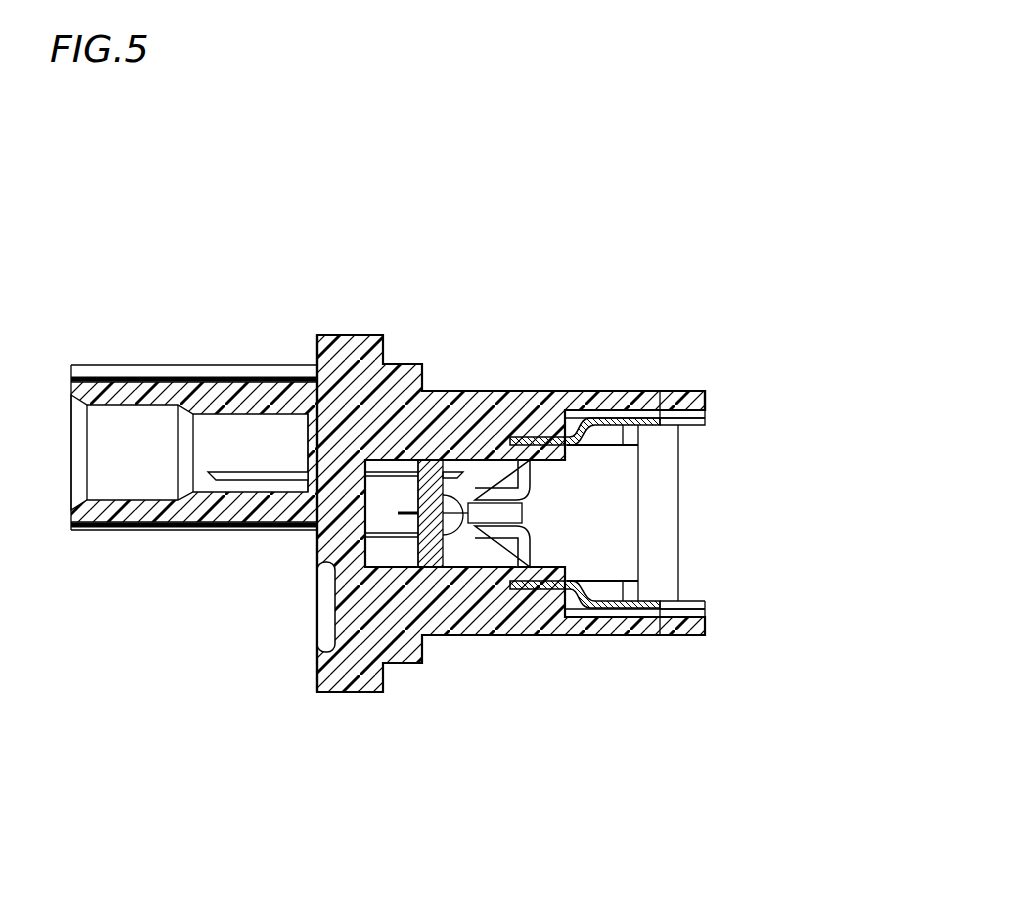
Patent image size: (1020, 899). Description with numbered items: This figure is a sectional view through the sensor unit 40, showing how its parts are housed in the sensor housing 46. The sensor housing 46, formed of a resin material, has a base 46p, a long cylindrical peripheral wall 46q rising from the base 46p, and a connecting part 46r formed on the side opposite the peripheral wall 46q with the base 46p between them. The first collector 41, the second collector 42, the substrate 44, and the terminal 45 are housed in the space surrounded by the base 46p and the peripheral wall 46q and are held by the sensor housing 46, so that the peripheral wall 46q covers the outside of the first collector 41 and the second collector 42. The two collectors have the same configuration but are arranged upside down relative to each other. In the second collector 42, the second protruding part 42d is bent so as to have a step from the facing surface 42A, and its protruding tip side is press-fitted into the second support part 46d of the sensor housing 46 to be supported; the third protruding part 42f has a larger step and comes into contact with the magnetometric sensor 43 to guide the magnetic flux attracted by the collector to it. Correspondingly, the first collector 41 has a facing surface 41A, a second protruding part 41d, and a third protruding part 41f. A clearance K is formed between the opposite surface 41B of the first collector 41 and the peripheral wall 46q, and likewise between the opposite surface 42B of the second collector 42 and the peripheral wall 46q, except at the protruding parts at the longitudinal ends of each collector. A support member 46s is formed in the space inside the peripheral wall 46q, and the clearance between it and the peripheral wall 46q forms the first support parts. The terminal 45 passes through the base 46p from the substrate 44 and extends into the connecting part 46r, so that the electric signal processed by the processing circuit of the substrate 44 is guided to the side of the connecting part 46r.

The sensor unit 40 is at (700, 250).
The first collector 41 is at (590, 421).
The facing surface 41A is at (650, 426).
The opposite surface 41B is at (675, 417).
The second protruding part 41d is at (520, 440).
The third protruding part 41f is at (490, 487).
The second collector 42 is at (612, 612).
The facing surface 42A is at (648, 601).
The opposite surface 42B is at (670, 617).
The second protruding part 42d is at (553, 590).
The third protruding part 42f is at (476, 528).
The magnetometric sensor 43 is at (492, 517).
The substrate 44 is at (418, 537).
The terminal 45 is at (247, 480).
The sensor housing 46 is at (401, 368).
The second support part 46d is at (512, 458).
The base 46p is at (350, 685).
The peripheral wall 46q is at (620, 398).
The connecting part 46r is at (134, 392).
The support member 46s is at (623, 473).
The clearance K is at (693, 413).